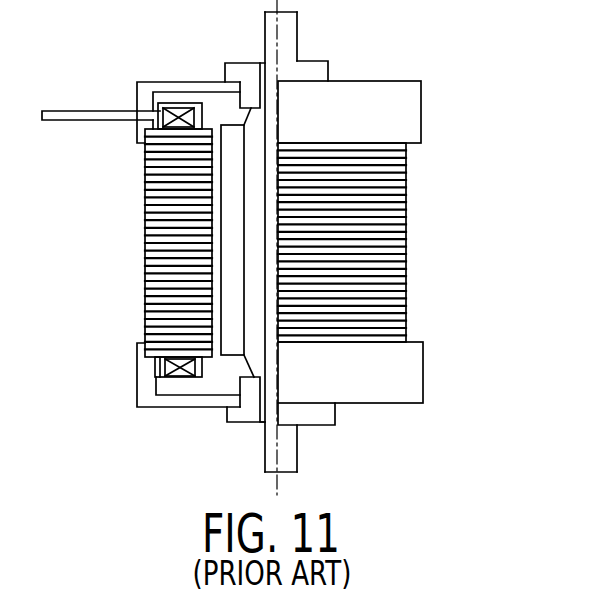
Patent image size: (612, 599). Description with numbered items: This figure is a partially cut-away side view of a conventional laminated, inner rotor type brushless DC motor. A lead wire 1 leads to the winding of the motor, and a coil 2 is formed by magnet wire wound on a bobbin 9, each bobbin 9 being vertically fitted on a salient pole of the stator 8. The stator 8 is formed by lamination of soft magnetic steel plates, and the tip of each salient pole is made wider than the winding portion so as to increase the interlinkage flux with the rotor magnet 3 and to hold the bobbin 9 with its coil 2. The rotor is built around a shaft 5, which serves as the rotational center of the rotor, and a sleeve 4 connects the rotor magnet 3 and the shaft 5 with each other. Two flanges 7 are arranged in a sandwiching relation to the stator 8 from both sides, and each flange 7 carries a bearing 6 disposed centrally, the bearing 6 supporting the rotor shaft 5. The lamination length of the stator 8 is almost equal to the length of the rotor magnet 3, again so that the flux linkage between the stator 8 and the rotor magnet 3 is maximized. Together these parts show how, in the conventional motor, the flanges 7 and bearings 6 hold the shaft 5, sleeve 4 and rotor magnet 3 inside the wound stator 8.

The lead wire 1 is at (66, 96).
The coil 2 is at (177, 110).
The rotor magnet 3 is at (232, 137).
The sleeve 4 is at (252, 145).
The shaft 5 is at (285, 28).
The bearing 6 is at (318, 70).
The flange 7 is at (398, 115).
The stator 8 is at (160, 237).
The bobbin 9 is at (155, 378).